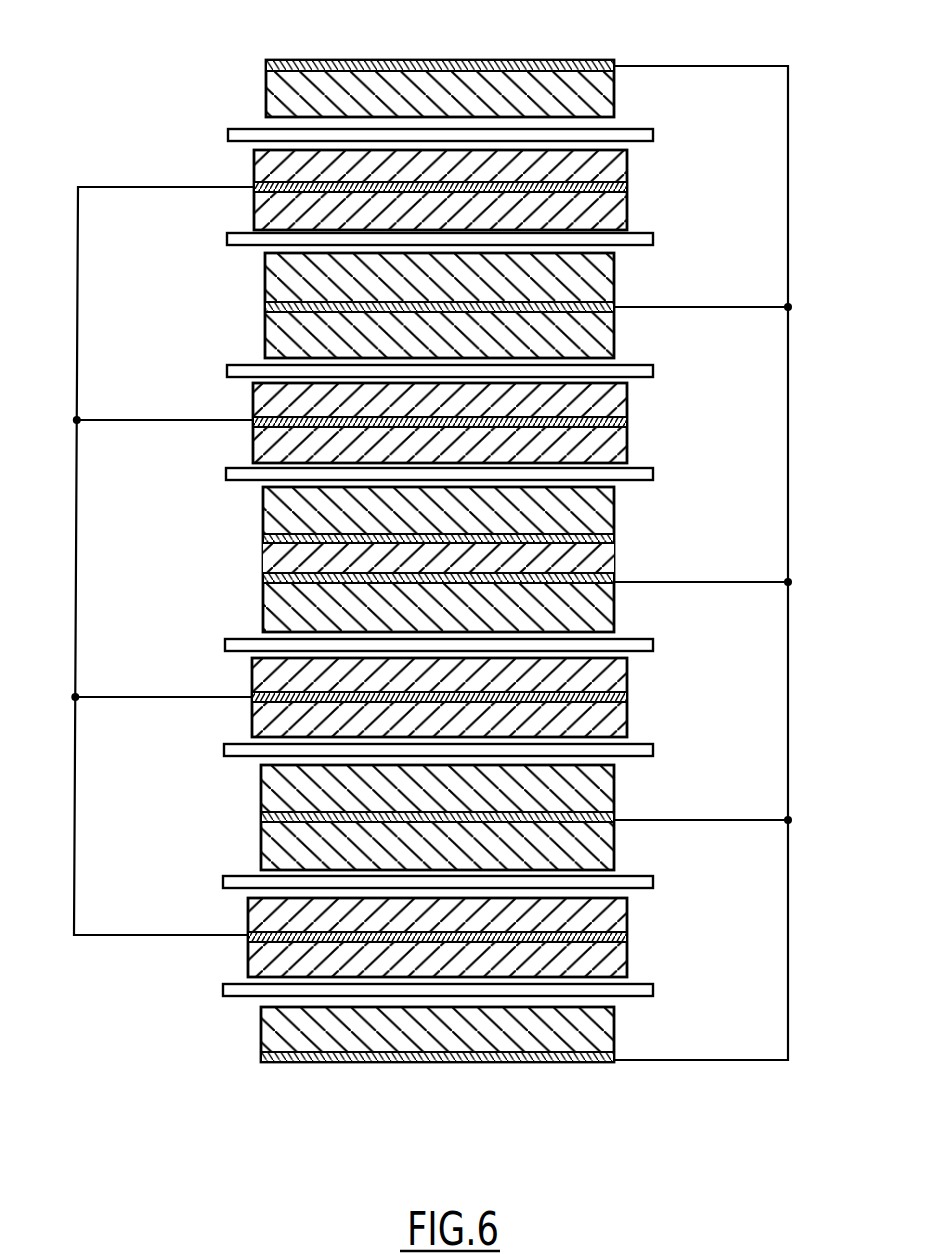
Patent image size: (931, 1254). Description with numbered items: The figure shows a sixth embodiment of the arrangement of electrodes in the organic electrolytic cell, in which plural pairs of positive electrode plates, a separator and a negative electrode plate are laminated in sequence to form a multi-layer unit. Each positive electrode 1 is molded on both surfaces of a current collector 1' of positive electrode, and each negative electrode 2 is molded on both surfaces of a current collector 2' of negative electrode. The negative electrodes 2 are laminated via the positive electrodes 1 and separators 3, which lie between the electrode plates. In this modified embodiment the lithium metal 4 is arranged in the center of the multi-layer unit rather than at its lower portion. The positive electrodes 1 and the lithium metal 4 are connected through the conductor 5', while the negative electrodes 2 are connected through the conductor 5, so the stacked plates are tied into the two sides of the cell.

The positive electrode 1 is at (471, 561).
The current collector of positive electrode 1' is at (402, 578).
The negative electrode 2 is at (408, 562).
The current collector of negative electrode 2' is at (478, 573).
The separator 3 is at (653, 136).
The lithium metal 4 is at (263, 559).
The conductor 5 is at (162, 534).
The conductor 5' is at (710, 533).